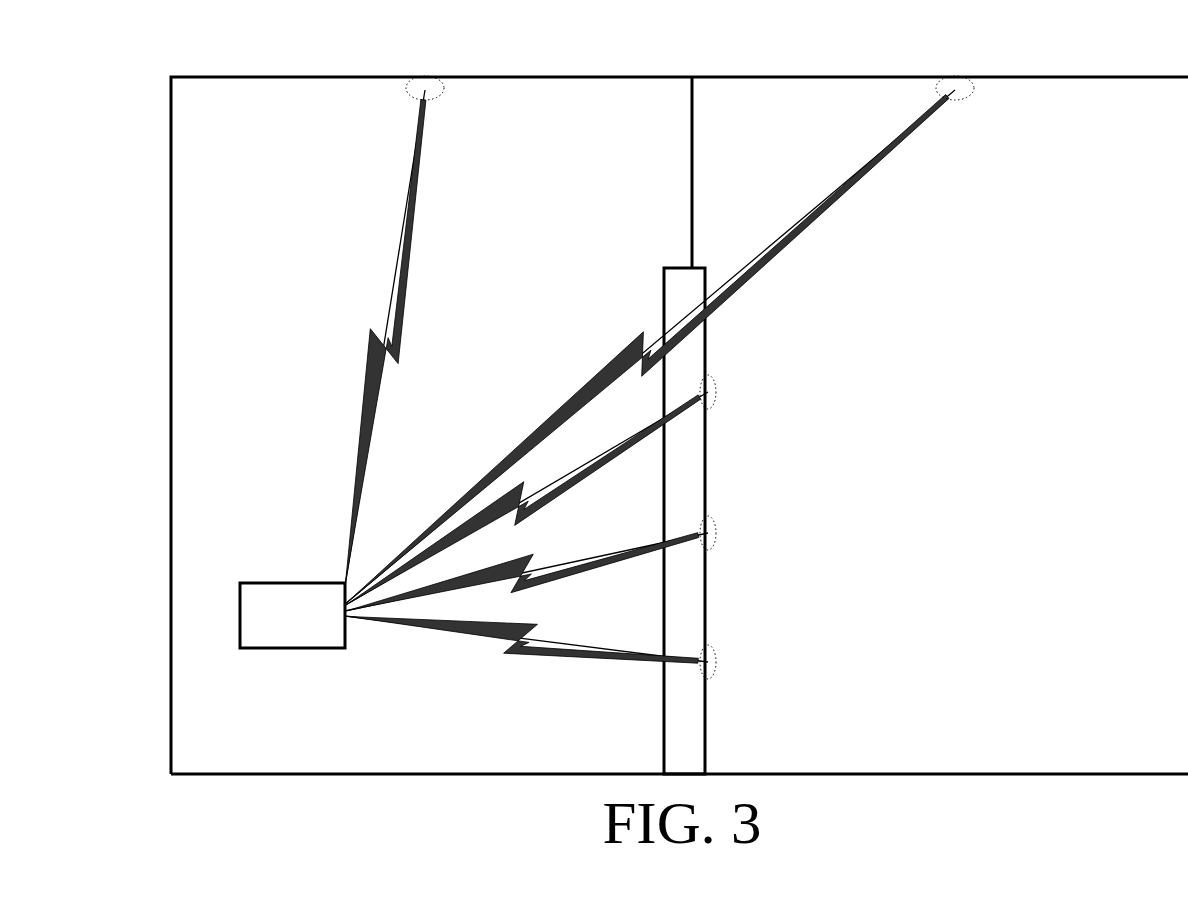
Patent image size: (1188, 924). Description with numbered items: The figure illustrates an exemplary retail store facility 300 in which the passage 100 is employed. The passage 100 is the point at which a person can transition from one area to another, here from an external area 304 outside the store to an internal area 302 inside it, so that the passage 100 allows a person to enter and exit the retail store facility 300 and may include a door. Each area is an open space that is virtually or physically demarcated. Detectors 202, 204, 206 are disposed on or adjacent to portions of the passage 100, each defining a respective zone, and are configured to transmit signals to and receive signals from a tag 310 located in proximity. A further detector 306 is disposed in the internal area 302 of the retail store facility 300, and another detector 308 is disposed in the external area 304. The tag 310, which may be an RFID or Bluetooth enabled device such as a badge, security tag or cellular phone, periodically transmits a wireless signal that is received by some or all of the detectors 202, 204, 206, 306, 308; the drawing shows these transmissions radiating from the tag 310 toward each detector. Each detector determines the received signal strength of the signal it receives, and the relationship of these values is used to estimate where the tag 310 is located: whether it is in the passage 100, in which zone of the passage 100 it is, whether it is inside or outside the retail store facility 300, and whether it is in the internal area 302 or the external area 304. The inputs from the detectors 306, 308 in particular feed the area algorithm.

The retail store facility 300 is at (272, 76).
The internal area 302 is at (258, 140).
The external area 304 is at (1119, 140).
The passage 100 is at (676, 300).
The tag 310 is at (292, 615).
The detector 306 is at (422, 93).
The detector 308 is at (953, 93).
The detector 206 is at (704, 394).
The detector 204 is at (705, 534).
The detector 202 is at (705, 663).